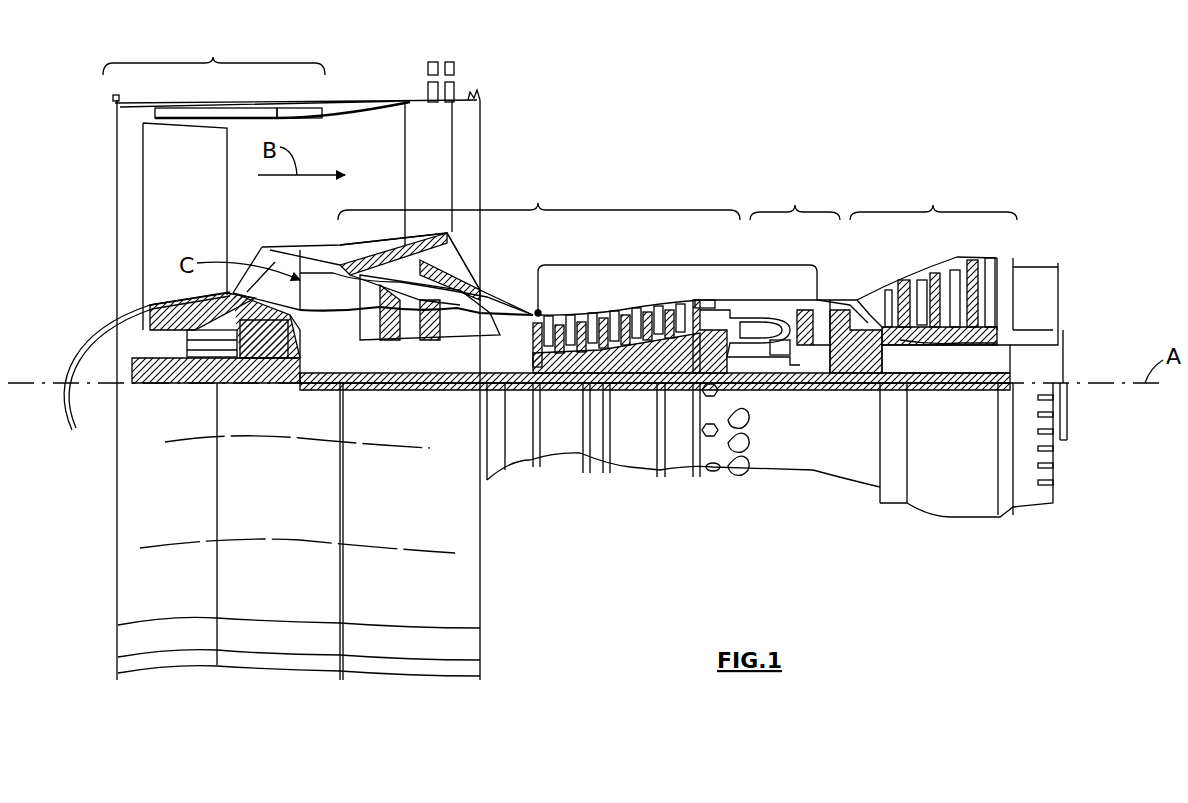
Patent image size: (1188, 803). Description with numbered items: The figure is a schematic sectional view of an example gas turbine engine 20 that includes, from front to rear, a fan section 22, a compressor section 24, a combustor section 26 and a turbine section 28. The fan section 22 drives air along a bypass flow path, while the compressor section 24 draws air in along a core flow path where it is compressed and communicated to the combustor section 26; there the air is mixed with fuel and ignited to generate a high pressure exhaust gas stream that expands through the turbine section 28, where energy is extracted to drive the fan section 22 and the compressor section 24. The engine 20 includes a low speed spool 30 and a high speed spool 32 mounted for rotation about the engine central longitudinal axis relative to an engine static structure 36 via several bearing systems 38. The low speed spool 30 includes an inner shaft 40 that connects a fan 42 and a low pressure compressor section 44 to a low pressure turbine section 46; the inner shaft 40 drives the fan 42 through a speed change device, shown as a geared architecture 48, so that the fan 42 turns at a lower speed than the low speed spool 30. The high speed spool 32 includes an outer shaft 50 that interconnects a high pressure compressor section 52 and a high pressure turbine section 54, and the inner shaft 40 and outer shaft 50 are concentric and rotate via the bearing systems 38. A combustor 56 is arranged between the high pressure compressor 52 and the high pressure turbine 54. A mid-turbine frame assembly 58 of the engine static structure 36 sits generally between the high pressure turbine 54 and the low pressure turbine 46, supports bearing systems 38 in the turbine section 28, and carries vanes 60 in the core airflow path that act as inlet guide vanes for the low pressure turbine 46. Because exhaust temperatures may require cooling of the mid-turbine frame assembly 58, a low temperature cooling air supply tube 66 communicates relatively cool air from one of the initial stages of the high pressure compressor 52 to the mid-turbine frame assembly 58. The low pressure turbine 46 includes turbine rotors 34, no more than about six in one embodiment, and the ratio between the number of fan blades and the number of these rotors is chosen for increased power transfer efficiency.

The gas turbine engine 20 is at (758, 150).
The fan section 22 is at (214, 53).
The compressor section 24 is at (539, 199).
The combustor section 26 is at (795, 199).
The turbine section 28 is at (933, 199).
The low speed spool 30 is at (637, 388).
The high speed spool 32 is at (677, 350).
The turbine rotors 34 is at (963, 345).
The engine static structure 36 is at (677, 473).
The bearing systems 38 is at (197, 383).
The inner shaft 40 is at (503, 387).
The fan 42 is at (185, 226).
The low pressure compressor section 44 is at (413, 285).
The low pressure turbine section 46 is at (945, 275).
The geared architecture 48 is at (303, 367).
The outer shaft 50 is at (753, 363).
The high pressure compressor section 52 is at (613, 357).
The high pressure turbine section 54 is at (852, 307).
The combustor 56 is at (753, 327).
The mid-turbine frame assembly 58 is at (863, 288).
The vanes 60 is at (875, 343).
The low temperature cooling air supply tube 66 is at (637, 265).